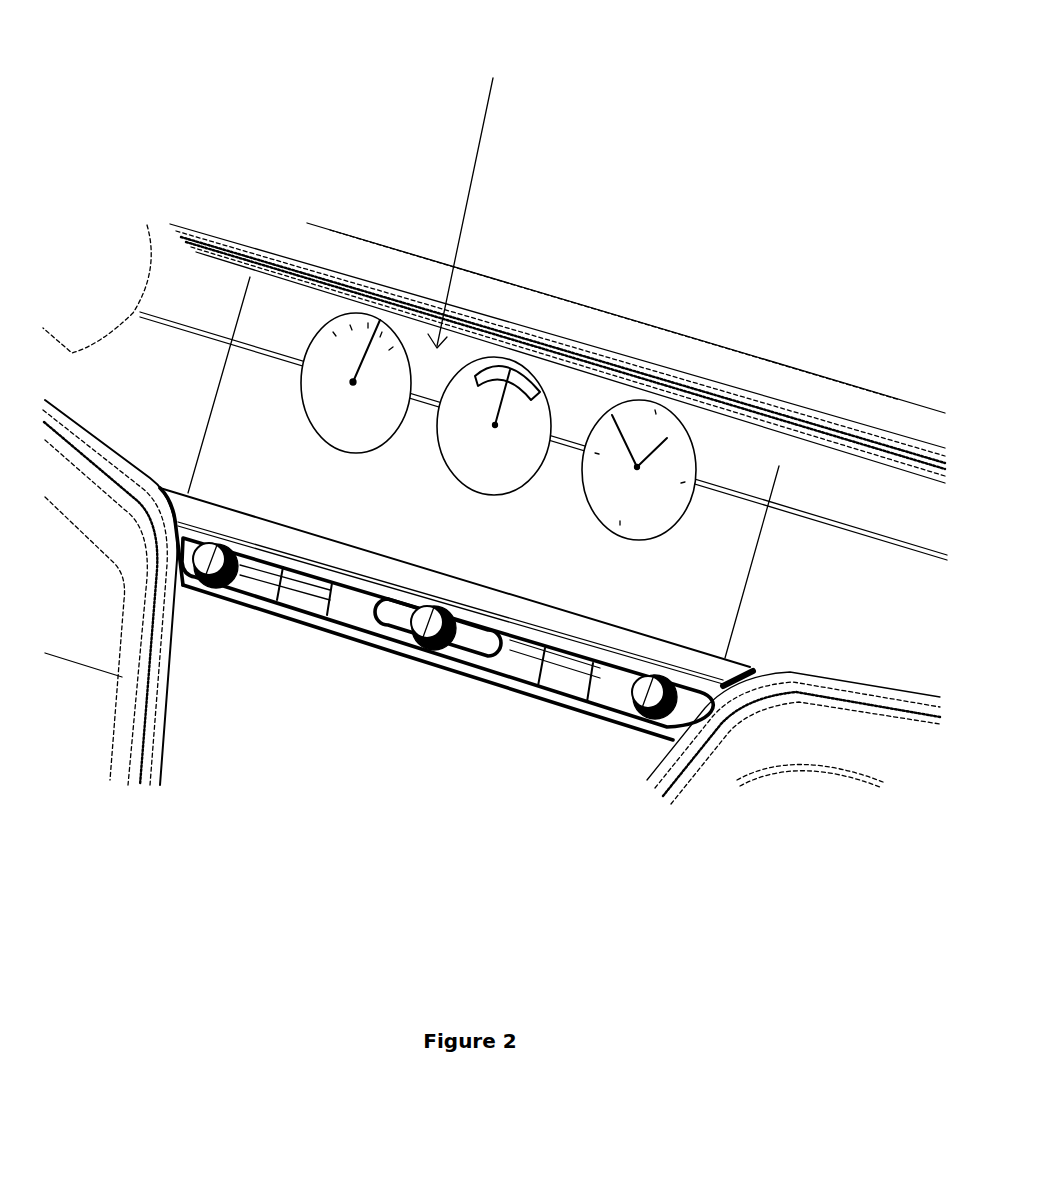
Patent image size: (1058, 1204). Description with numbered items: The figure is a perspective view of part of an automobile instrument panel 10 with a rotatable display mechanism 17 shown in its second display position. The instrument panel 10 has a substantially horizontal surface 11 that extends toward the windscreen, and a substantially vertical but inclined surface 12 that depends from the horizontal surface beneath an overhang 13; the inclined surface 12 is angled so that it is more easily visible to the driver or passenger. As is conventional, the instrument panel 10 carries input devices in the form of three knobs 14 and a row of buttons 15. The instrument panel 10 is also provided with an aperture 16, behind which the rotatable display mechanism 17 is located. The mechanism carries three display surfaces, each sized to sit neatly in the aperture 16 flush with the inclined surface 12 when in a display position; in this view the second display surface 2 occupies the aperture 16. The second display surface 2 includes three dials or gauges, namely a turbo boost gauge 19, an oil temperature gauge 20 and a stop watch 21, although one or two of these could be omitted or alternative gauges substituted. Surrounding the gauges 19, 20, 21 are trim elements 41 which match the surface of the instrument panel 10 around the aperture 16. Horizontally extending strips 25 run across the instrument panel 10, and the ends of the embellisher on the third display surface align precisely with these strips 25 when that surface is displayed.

The second display surface 2 is at (676, 588).
The instrument panel 10 is at (327, 243).
The substantially horizontal surface 11 is at (746, 316).
The inclined surface 12 is at (848, 567).
The overhang 13 is at (862, 422).
The knobs 14 is at (218, 580).
The buttons 15 is at (390, 617).
The aperture 16 is at (779, 466).
The rotatable display mechanism 17 is at (469, 198).
The turbo boost gauge 19 is at (380, 320).
The oil temperature gauge 20 is at (480, 358).
The stop watch 21 is at (678, 422).
The strips 25 is at (912, 548).
The trim elements 41 is at (247, 390).